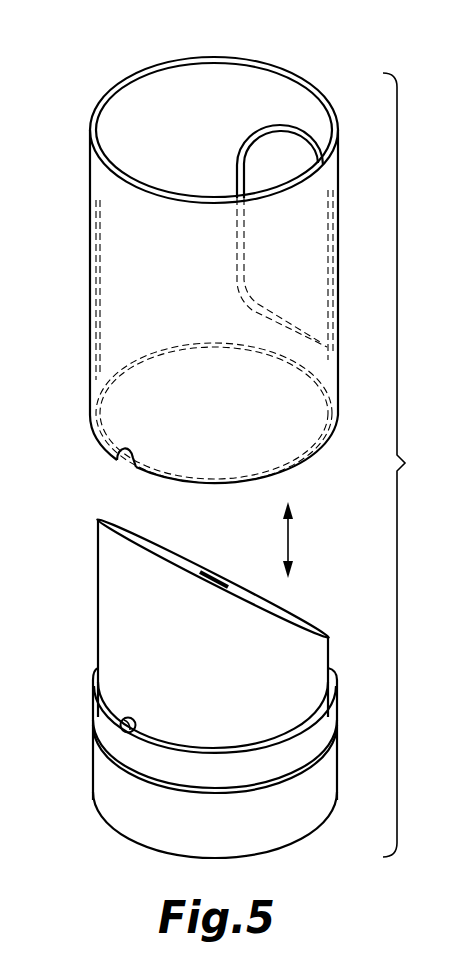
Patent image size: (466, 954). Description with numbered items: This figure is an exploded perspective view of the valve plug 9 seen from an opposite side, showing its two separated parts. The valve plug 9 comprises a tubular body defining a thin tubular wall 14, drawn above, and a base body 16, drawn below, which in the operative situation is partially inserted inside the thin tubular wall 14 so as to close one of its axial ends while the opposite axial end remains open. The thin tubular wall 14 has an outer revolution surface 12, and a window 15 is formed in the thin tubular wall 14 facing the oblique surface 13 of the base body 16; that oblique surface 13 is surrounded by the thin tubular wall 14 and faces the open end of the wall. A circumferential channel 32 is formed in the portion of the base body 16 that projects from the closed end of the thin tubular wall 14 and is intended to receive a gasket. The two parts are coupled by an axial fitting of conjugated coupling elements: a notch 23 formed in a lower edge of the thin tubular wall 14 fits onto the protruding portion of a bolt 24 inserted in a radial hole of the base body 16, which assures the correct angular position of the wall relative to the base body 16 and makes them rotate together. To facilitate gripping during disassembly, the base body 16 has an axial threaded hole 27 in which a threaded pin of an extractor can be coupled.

The valve plug 9 is at (408, 465).
The outer revolution surface 12 is at (110, 244).
The oblique surface 13 is at (287, 617).
The thin tubular wall 14 is at (145, 74).
The window 15 is at (243, 172).
The base body 16 is at (113, 623).
The notch 23 is at (119, 452).
The bolt 24 is at (118, 736).
The axial threaded hole 27 is at (214, 570).
The circumferential channel 32 is at (160, 770).